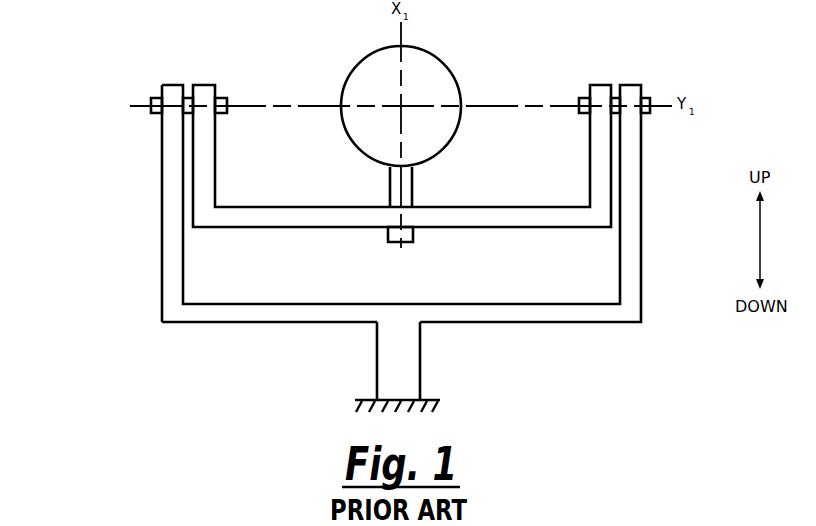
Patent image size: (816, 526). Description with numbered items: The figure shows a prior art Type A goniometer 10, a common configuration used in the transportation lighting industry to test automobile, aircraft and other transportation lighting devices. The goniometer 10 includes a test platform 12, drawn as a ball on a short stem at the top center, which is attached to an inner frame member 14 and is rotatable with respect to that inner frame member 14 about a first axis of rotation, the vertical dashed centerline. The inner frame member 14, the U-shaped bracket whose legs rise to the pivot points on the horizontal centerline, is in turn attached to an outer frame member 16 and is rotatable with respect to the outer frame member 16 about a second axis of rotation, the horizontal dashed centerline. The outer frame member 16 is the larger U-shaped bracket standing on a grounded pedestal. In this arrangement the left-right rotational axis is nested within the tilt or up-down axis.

The Type A goniometer 10 is at (80, 143).
The test platform 12 is at (441, 57).
The inner frame member 14 is at (512, 229).
The outer frame member 16 is at (162, 251).